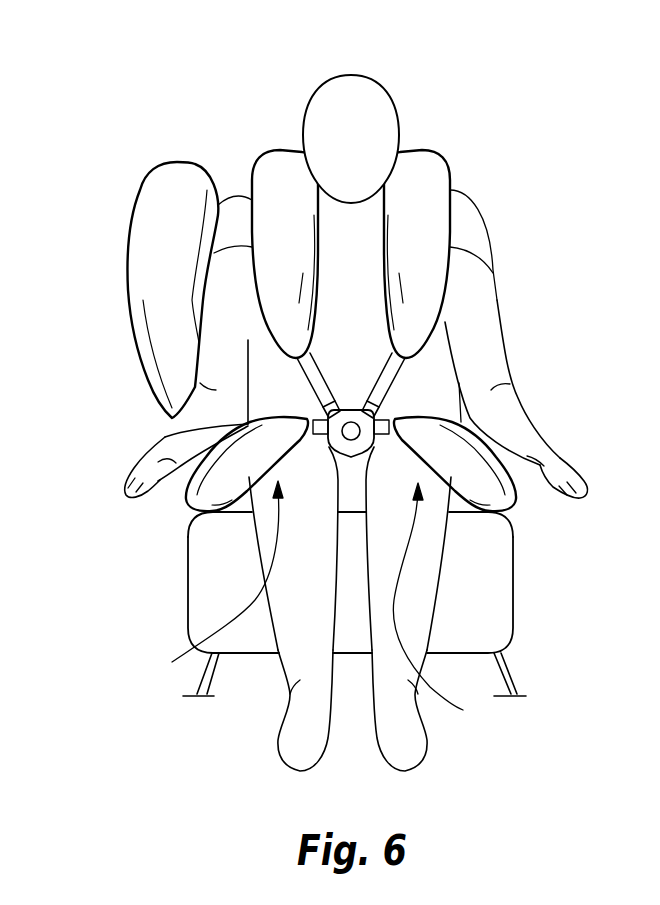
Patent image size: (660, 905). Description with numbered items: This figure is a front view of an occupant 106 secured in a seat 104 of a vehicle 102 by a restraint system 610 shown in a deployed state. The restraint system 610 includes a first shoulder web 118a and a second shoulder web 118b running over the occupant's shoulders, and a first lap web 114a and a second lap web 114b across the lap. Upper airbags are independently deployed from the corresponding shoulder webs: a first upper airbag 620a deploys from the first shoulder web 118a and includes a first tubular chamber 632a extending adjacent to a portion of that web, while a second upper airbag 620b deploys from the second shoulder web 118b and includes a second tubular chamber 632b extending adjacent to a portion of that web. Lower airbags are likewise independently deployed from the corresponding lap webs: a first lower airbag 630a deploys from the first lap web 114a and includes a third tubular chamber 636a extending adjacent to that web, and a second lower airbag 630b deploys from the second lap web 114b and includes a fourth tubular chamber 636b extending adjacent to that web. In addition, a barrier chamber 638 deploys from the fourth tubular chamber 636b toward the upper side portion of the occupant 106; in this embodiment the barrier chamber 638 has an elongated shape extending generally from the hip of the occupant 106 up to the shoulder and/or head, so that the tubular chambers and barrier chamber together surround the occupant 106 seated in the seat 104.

The restraint system 610 is at (153, 131).
The second upper airbag 620b is at (244, 157).
The first upper airbag 620a is at (460, 158).
The second tubular chamber 632b is at (267, 218).
The first tubular chamber 632a is at (427, 222).
The barrier chamber 638 is at (157, 282).
The second shoulder web 118b is at (301, 372).
The first shoulder web 118a is at (395, 373).
The fourth tubular chamber 636b is at (255, 440).
The third tubular chamber 636a is at (470, 440).
The second lap web 114b is at (200, 517).
The first lap web 114a is at (513, 516).
The occupant 106 is at (430, 578).
The seat 104 is at (512, 627).
The second lower airbag 630b is at (200, 581).
The first lower airbag 630a is at (455, 608).
The vehicle 102 is at (528, 767).